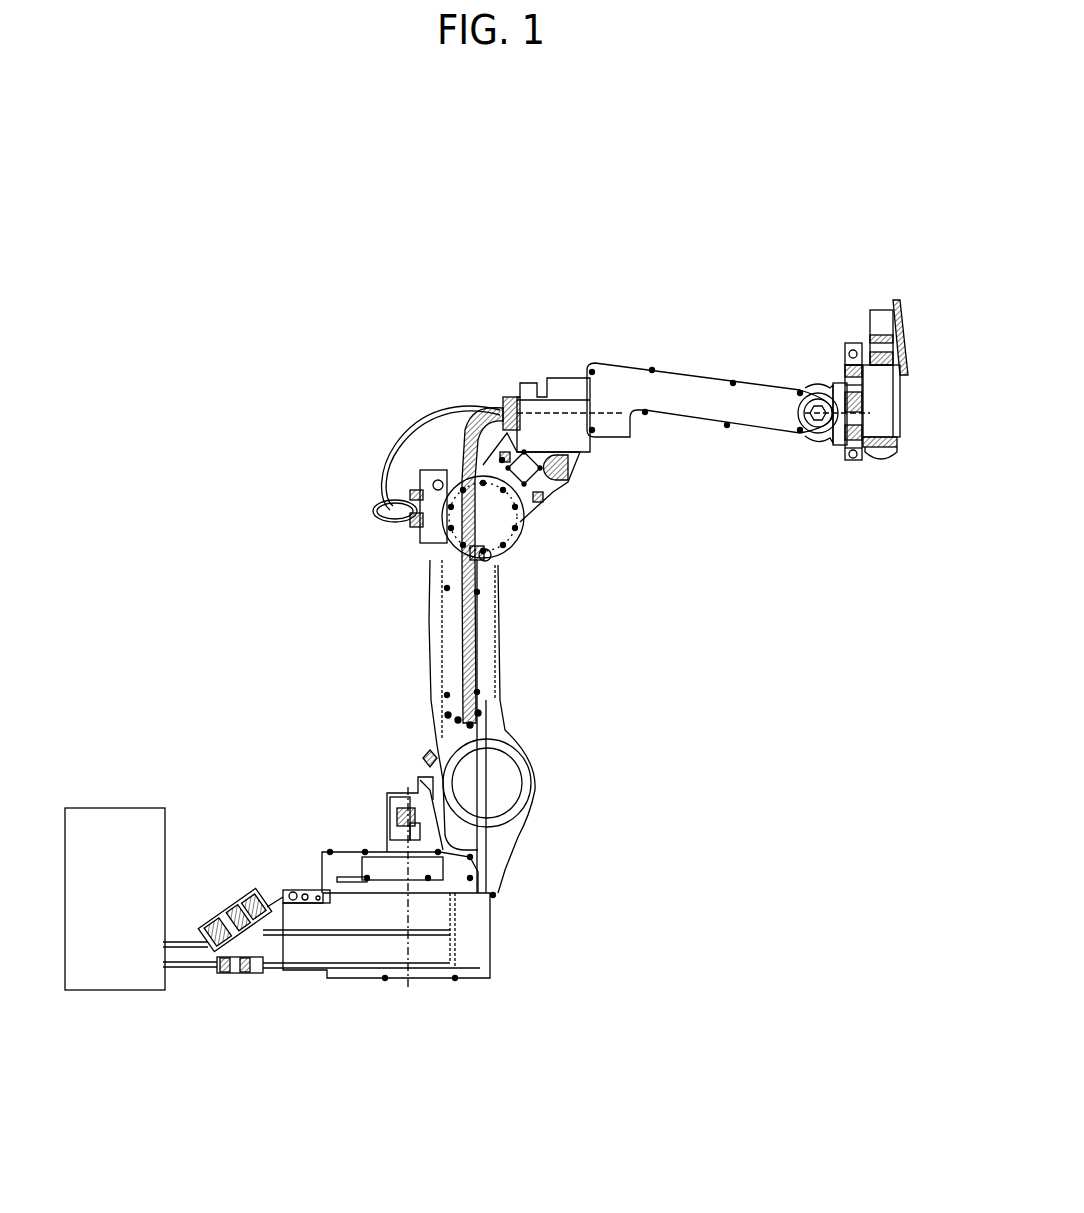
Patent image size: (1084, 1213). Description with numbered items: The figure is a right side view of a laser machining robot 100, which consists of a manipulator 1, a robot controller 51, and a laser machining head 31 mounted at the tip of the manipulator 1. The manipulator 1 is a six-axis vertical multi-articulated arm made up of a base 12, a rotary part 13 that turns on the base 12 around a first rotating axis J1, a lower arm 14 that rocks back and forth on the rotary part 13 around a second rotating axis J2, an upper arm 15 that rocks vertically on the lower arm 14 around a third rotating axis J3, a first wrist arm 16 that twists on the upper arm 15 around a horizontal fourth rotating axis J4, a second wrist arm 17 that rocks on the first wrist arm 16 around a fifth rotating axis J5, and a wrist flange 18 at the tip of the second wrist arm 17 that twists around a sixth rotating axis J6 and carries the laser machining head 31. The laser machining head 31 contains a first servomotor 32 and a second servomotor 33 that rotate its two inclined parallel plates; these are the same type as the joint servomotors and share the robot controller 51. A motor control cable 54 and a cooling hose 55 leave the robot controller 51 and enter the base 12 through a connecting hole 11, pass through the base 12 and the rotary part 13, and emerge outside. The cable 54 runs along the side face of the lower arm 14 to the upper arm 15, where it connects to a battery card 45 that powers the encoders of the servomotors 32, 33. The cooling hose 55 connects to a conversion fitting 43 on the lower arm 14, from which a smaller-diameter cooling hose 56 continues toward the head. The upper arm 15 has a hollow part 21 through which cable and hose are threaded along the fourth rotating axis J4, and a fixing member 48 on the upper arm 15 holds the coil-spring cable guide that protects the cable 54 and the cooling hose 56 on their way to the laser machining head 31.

The manipulator 1 is at (400, 275).
The connecting hole 11 is at (235, 903).
The base 12 is at (482, 930).
The rotary part 13 is at (513, 855).
The lower arm 14 is at (428, 645).
The upper arm 15 is at (555, 492).
The first wrist arm 16 is at (640, 437).
The second wrist arm 17 is at (813, 380).
The wrist flange 18 is at (847, 380).
The hollow part 21 is at (557, 400).
The laser machining head 31 is at (882, 465).
The servomotor 32 is at (852, 342).
The servomotor 33 is at (855, 462).
The conversion fitting 43 is at (488, 558).
The battery card 45 is at (420, 510).
The fixing member 48 is at (508, 397).
The robot controller 51 is at (102, 825).
The cable 54 is at (400, 433).
The cooling hose 55 is at (187, 968).
The cooling hose 56 is at (473, 410).
The laser machining robot 100 is at (760, 1044).
The rotating axis J1 is at (406, 907).
The rotating axis J2 is at (487, 782).
The rotating axis J3 is at (485, 508).
The rotating axis J4 is at (598, 410).
The rotating axis J5 is at (780, 413).
The rotating axis J6 is at (832, 417).